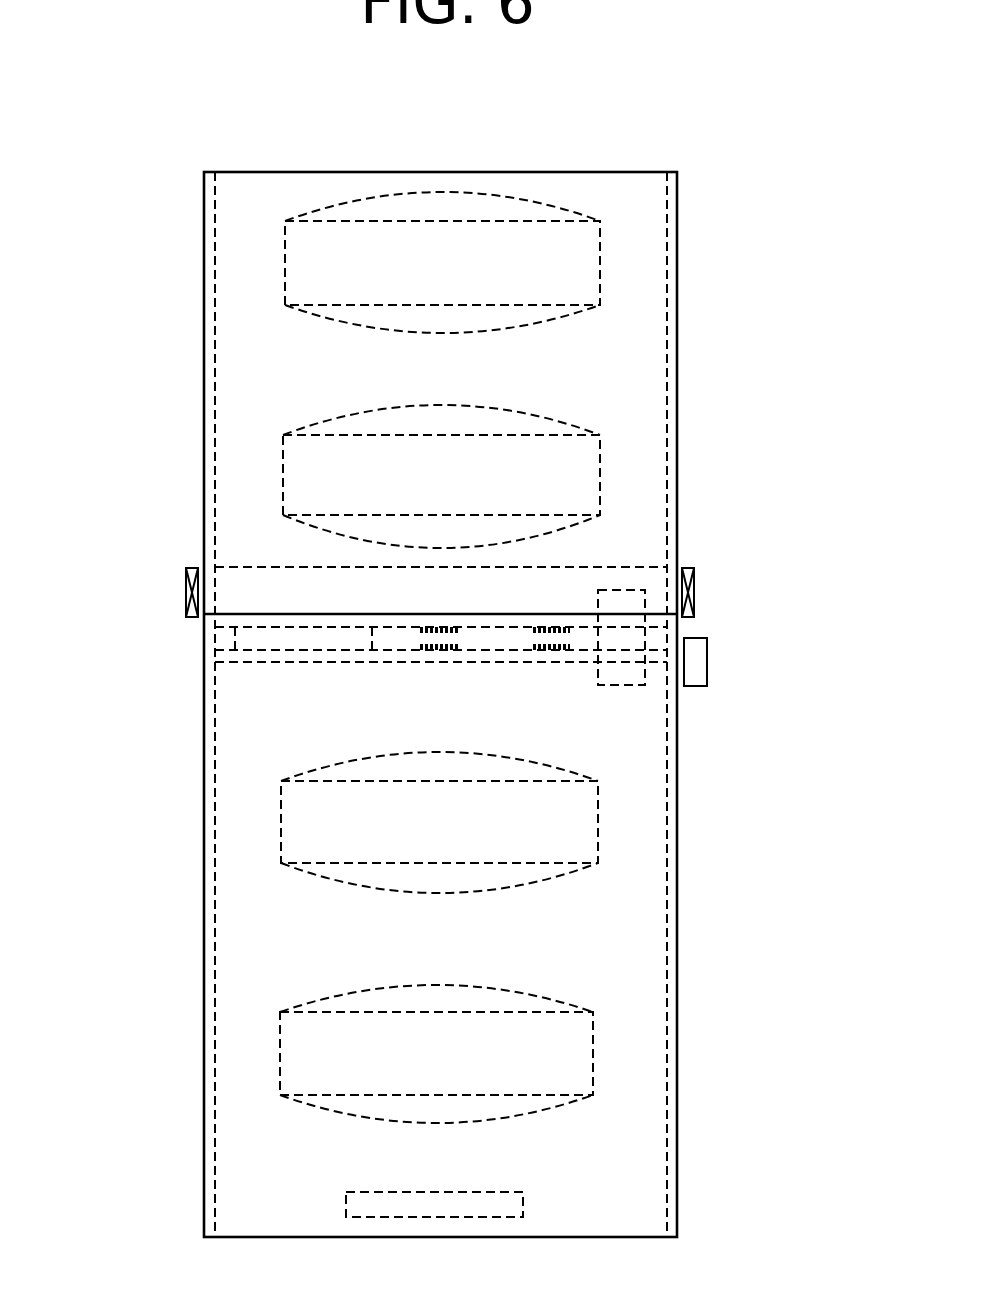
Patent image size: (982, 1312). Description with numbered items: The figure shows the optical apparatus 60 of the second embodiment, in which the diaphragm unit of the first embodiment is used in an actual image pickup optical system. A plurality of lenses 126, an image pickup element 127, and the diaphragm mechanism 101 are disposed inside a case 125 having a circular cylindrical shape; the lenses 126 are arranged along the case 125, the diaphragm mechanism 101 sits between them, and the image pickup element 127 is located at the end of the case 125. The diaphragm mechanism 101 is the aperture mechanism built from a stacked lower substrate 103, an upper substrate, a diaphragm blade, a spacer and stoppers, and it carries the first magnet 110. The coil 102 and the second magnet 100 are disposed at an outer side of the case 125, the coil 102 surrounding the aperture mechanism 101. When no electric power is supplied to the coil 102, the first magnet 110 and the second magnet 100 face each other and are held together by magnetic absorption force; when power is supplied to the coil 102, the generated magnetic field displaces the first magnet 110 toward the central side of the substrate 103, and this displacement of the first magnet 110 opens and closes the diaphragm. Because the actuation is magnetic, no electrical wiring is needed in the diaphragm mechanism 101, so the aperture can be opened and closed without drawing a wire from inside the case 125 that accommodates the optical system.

The optical apparatus 60 is at (688, 1005).
The second magnet 100 is at (707, 657).
The aperture mechanism 101 is at (270, 600).
The coil 102 is at (694, 590).
The lower substrate 103 is at (250, 652).
The first magnet 110 is at (618, 597).
The case 125 is at (210, 322).
The lenses 126 is at (582, 265).
The image pickup element 127 is at (345, 1205).